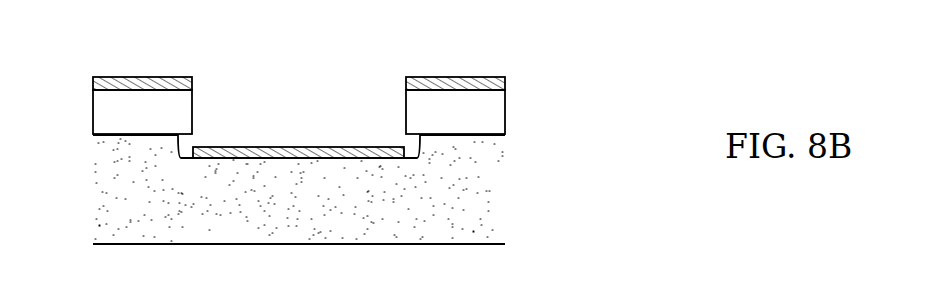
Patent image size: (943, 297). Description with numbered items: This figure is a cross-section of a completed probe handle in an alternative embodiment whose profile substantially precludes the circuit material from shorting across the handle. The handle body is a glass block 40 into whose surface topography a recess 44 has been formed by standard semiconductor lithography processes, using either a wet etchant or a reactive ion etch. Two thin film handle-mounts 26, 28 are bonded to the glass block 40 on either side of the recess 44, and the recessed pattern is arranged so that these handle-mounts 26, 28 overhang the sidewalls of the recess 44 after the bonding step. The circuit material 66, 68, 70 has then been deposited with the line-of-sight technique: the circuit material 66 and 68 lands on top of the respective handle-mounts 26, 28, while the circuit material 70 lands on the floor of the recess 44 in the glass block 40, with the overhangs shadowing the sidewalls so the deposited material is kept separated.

The thin film handle-mount 26 is at (120, 106).
The thin film handle-mount 28 is at (487, 103).
The glass block 40 is at (298, 200).
The recess 44 is at (295, 135).
The circuit material 66 is at (148, 82).
The circuit material 68 is at (452, 80).
The circuit material 70 is at (213, 153).